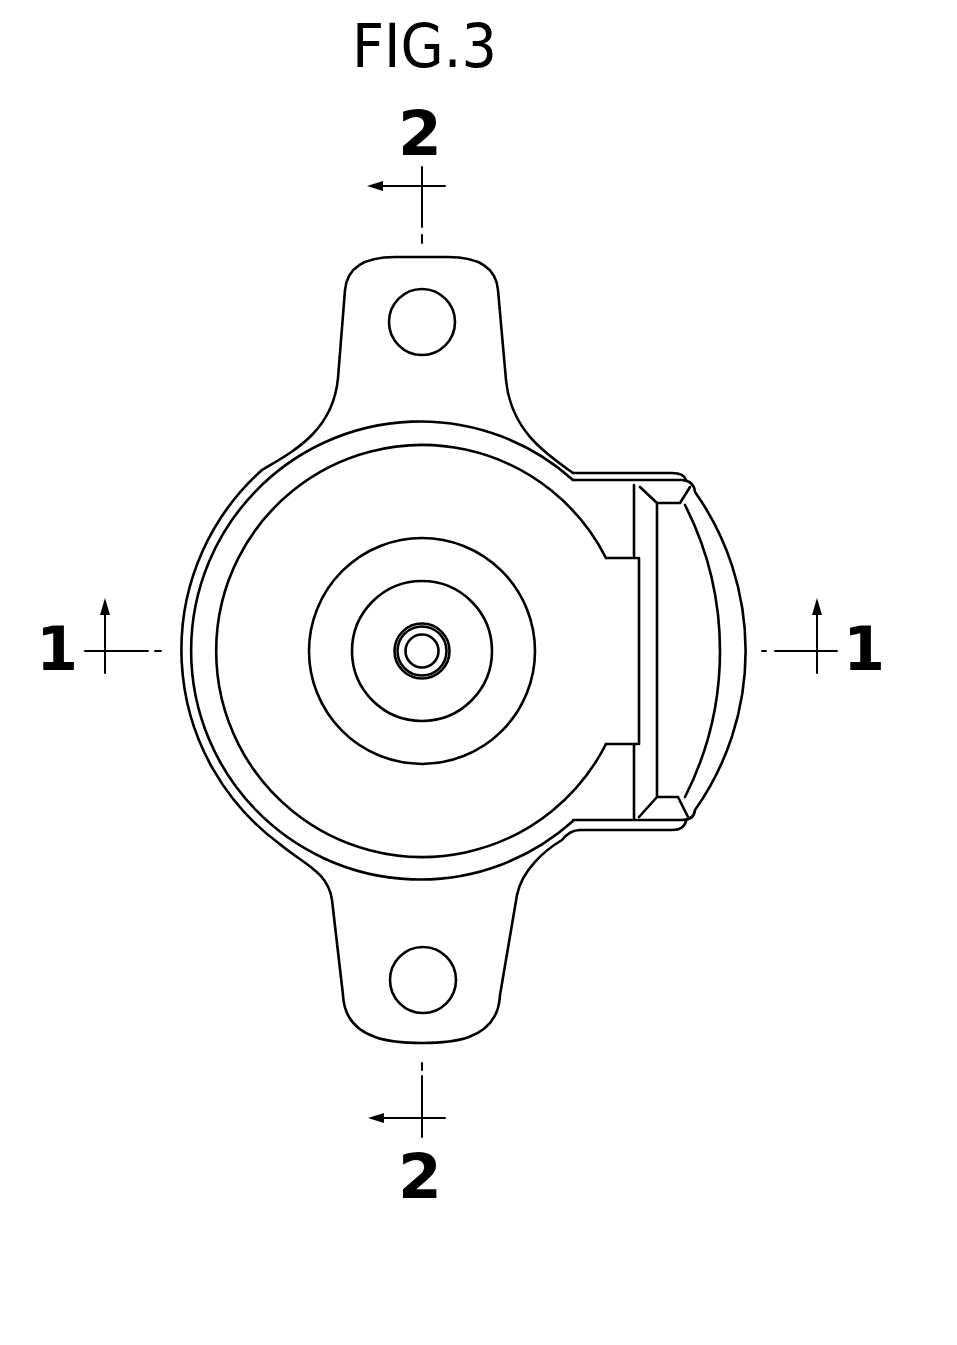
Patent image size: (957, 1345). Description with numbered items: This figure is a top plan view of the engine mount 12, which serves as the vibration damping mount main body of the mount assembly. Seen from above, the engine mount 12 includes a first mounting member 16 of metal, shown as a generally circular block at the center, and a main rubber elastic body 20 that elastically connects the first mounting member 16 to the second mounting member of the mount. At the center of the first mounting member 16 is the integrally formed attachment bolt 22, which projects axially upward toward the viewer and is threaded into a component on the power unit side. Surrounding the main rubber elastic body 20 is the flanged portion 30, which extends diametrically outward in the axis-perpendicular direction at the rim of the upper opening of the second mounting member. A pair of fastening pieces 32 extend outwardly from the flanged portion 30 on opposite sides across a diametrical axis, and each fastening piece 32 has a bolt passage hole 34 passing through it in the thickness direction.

The engine mount 12 is at (667, 336).
The first mounting member 16 is at (442, 604).
The main rubber elastic body 20 is at (505, 770).
The attachment bolt 22 is at (422, 651).
The flanged portion 30 is at (226, 782).
The fastening pieces 32 is at (363, 378).
The bolt passage holes 34 is at (440, 296).